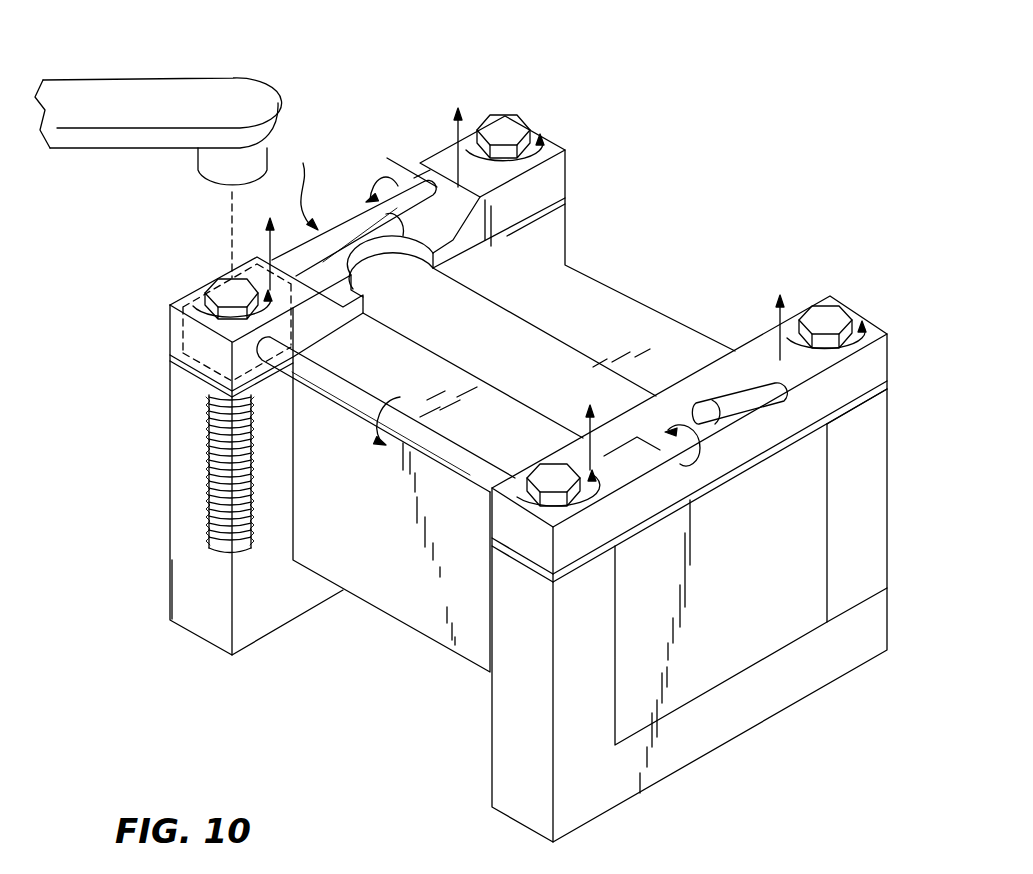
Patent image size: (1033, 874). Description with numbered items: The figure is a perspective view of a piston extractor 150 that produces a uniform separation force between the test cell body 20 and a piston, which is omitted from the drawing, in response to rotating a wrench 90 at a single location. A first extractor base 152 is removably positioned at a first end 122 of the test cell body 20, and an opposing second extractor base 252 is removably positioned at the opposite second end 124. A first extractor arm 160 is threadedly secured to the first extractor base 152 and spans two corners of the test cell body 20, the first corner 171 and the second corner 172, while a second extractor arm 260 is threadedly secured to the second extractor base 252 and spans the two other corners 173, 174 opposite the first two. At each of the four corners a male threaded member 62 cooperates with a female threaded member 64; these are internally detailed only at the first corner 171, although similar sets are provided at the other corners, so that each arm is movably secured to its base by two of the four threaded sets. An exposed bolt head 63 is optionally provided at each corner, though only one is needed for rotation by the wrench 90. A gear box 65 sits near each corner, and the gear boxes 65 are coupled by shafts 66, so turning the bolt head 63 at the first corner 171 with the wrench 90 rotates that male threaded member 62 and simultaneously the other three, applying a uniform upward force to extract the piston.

The test cell body 20 is at (382, 590).
The male threaded member 62 is at (213, 415).
The bolt head 63 is at (217, 287).
The female threaded member 64 is at (213, 452).
The gear box 65 is at (183, 337).
The shaft 66 is at (348, 240).
The wrench 90 is at (233, 98).
The first end 122 is at (306, 182).
The second end 124 is at (763, 603).
The piston extractor 150 is at (663, 252).
The first extractor base 152 is at (275, 628).
The first extractor arm 160 is at (420, 185).
The first corner 171 is at (158, 515).
The second corner 172 is at (503, 110).
The third corner 173 is at (550, 748).
The fourth corner 174 is at (890, 537).
The second extractor base 252 is at (490, 745).
The second extractor arm 260 is at (745, 458).